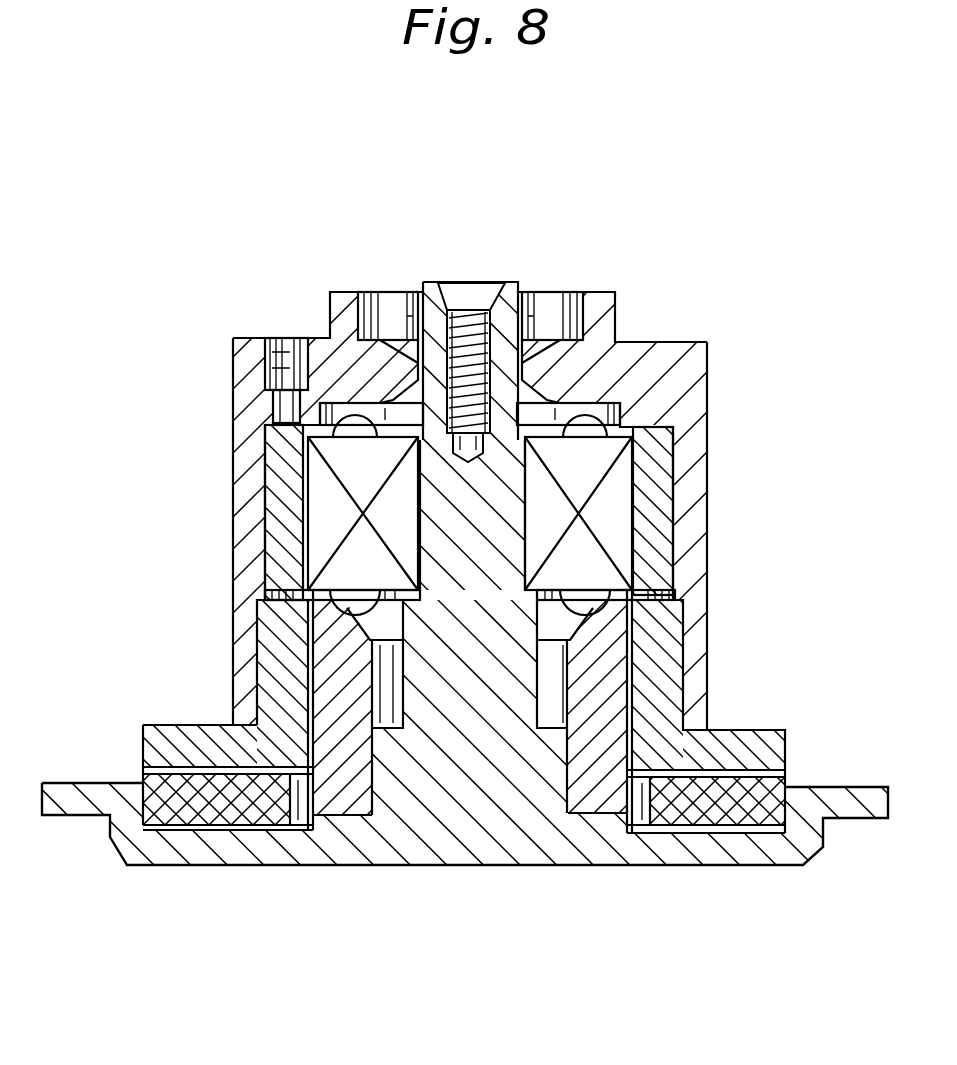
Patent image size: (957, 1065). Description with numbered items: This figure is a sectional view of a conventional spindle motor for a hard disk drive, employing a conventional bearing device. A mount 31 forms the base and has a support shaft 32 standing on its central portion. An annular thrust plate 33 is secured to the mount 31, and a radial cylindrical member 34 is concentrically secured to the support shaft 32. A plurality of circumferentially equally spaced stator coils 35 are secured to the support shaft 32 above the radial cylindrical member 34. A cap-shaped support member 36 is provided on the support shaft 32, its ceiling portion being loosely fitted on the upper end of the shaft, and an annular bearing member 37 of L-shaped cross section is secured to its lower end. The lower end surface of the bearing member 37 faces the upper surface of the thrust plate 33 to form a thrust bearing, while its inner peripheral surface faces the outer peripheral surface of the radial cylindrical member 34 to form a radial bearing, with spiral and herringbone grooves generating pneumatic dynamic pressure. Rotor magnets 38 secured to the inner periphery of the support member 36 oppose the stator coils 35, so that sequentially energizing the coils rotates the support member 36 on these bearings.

The mount 31 is at (260, 853).
The support shaft 32 is at (425, 664).
The annular thrust plate 33 is at (168, 790).
The radial cylindrical member 34 is at (613, 672).
The stator coils 35 is at (318, 483).
The support member 36 is at (345, 362).
The annular bearing member 37 is at (290, 688).
The rotor magnets 38 is at (285, 518).